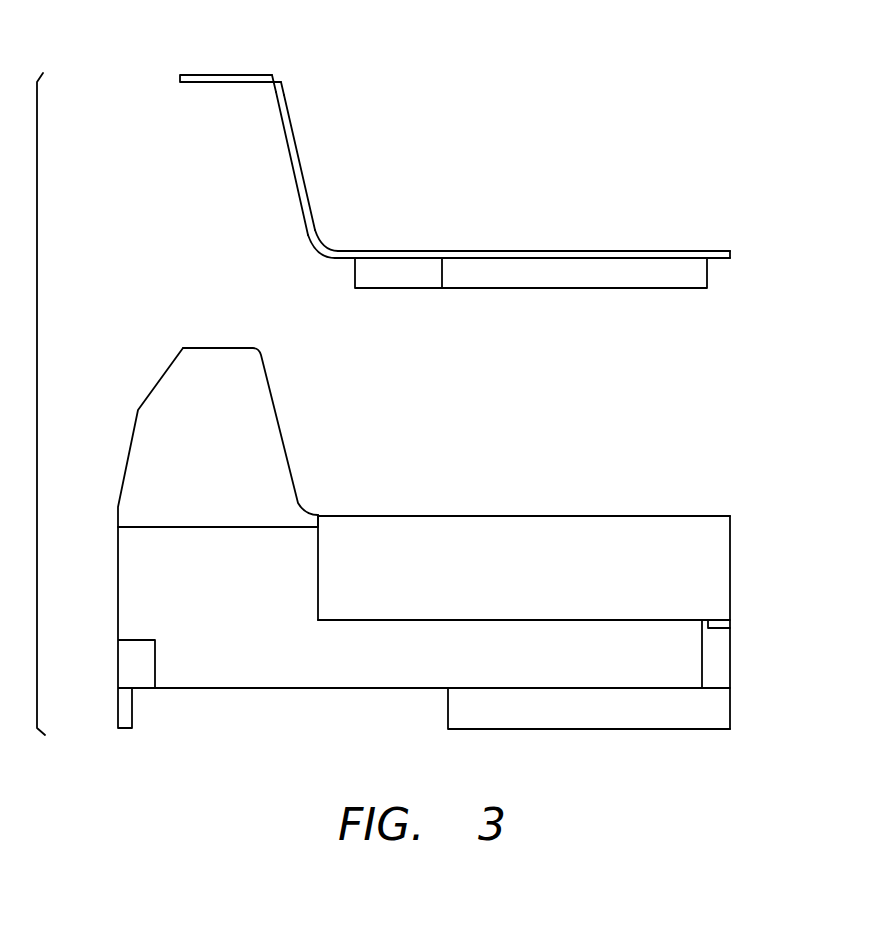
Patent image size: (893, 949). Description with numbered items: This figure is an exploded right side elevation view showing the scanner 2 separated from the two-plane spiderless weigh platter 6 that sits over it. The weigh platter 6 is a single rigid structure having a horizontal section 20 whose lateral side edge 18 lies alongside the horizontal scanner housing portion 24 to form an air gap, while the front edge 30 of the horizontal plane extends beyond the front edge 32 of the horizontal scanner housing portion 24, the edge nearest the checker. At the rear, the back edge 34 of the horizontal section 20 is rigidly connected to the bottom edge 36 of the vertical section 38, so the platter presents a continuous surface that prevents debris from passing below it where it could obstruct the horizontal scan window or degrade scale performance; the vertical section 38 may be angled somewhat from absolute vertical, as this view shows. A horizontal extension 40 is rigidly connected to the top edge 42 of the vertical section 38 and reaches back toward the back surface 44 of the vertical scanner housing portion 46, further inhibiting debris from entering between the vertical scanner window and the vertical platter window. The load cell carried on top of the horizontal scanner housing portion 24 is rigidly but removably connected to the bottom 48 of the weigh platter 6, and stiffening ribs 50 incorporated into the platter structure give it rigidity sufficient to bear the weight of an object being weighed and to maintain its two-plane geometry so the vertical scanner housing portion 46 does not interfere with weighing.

The scanner 2 is at (438, 535).
The two-plane spiderless weigh platter 6 is at (485, 162).
The lateral side edge 18 is at (622, 256).
The horizontal section 20 is at (522, 250).
The horizontal scanner housing portion 24 is at (547, 662).
The front edge 30 is at (733, 252).
The front edge of the horizontal scanner housing portion 32 is at (732, 595).
The back edge 34 is at (320, 252).
The bottom edge 36 is at (310, 231).
The vertical section 38 is at (299, 148).
The horizontal extension 40 is at (215, 75).
The top edge 42 is at (274, 77).
The back surface 44 is at (185, 437).
The vertical scanner housing portion 46 is at (157, 392).
The bottom of the two-plane weigh platter 48 is at (440, 297).
The stiffening ribs 50 is at (565, 270).